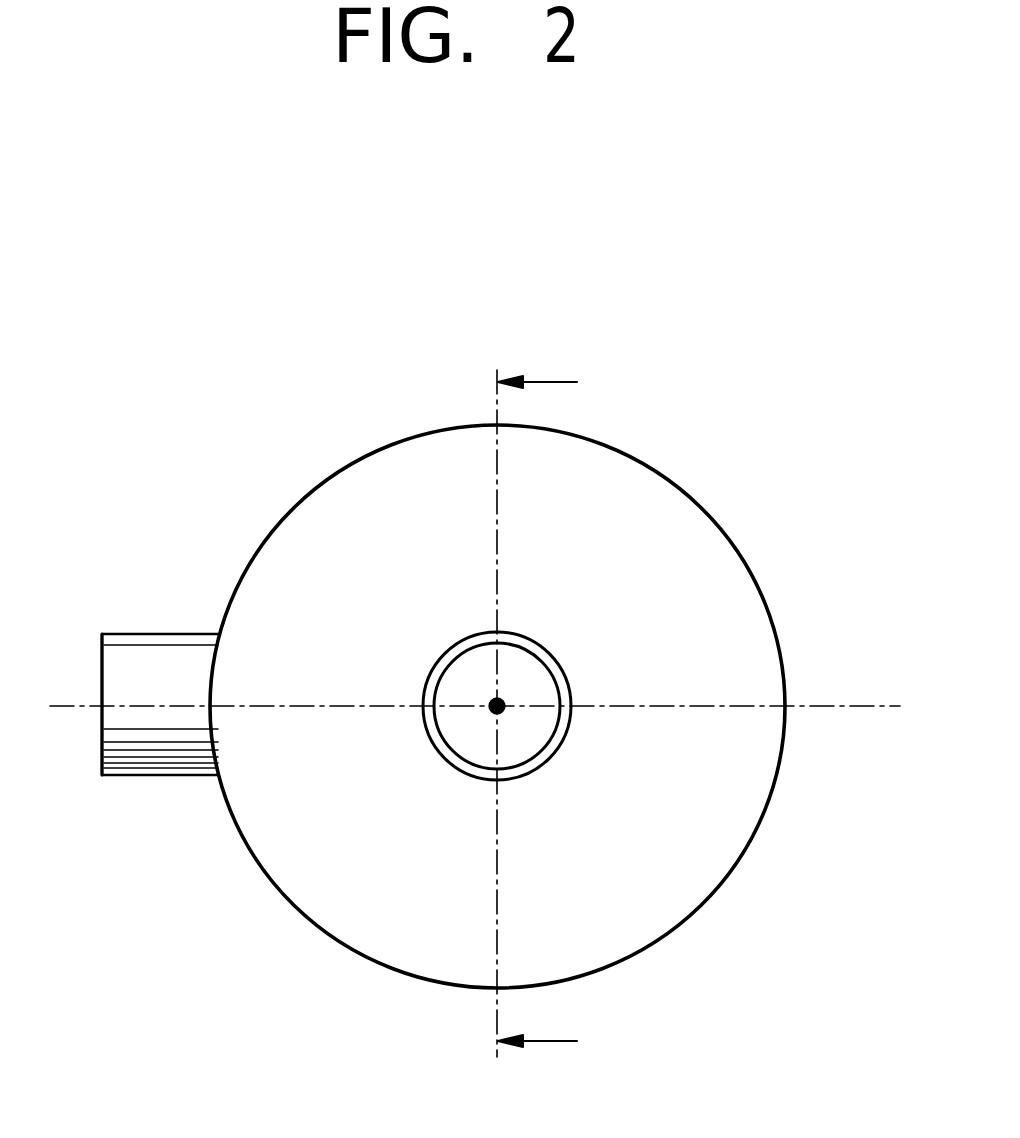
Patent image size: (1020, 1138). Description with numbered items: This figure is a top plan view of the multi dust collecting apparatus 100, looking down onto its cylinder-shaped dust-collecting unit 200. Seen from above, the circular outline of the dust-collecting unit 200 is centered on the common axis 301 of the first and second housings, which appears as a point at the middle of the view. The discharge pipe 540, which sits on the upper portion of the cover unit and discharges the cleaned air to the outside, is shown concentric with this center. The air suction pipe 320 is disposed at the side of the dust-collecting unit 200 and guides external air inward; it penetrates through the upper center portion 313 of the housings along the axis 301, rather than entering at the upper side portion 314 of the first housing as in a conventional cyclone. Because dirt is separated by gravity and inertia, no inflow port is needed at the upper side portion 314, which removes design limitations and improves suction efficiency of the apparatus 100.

The multi dust collecting apparatus 100 is at (775, 294).
The dust-collecting unit 200 is at (773, 603).
The common axis 301 is at (497, 706).
The upper center portion 313 is at (240, 632).
The upper side portion 314 is at (437, 408).
The air suction pipe 320 is at (140, 775).
The discharge pipe 540 is at (537, 643).